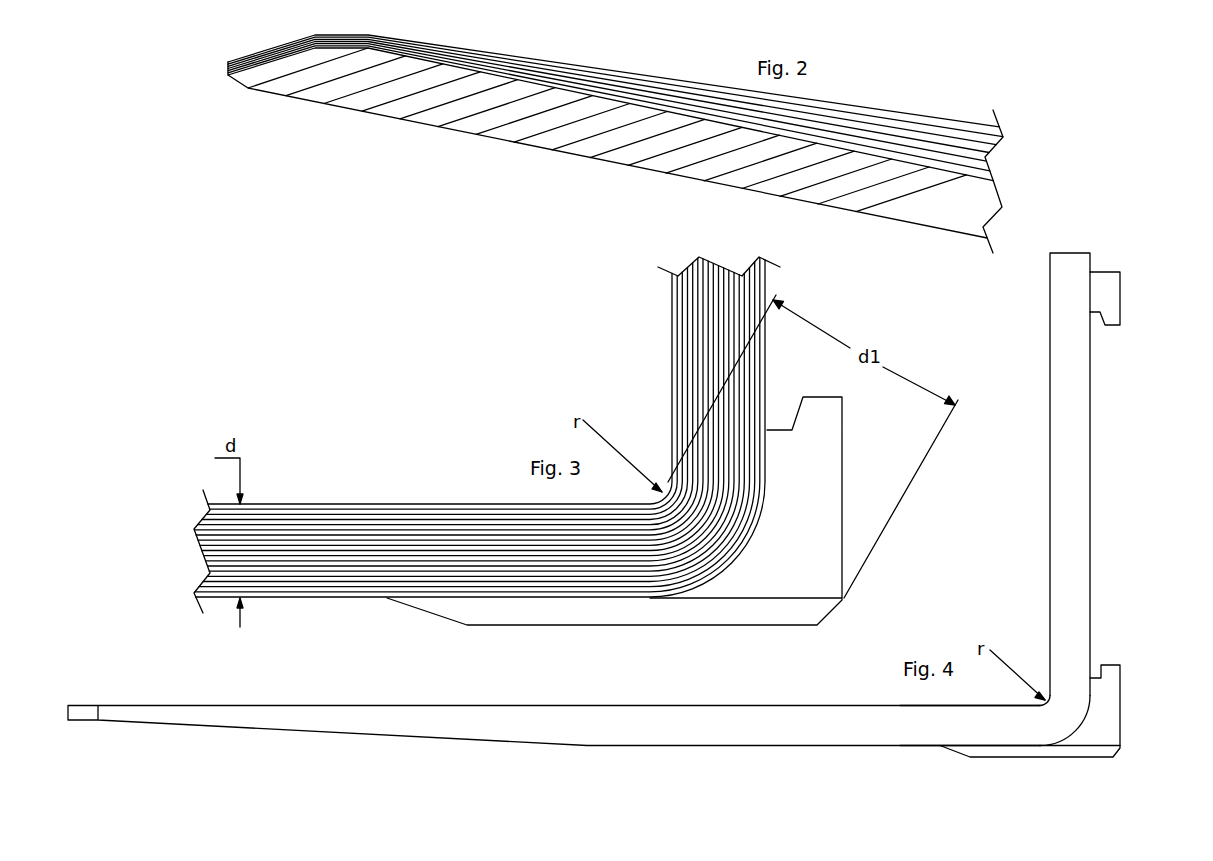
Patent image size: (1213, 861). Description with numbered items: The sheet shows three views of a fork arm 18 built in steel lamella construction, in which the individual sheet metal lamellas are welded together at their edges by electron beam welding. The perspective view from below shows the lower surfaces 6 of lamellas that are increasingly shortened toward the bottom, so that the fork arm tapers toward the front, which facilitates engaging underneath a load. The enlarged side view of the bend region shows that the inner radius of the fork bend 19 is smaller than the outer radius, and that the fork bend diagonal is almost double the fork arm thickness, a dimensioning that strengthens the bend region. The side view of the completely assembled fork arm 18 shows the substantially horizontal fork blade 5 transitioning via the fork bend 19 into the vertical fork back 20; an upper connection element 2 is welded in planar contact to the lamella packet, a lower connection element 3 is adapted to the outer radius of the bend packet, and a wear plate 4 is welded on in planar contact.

In FIG. 4, the upper connection element 2 is at (1102, 293).
In FIG. 4, the lower connection element 3 is at (1103, 712).
In FIG. 4, the wear plate 4 is at (1013, 751).
In FIG. 4, the fork blade 5 is at (326, 717).
In FIG. 2, the lower surfaces of the shortened lamellas 6 is at (367, 80).
In FIG. 4, the fork arm 18 is at (960, 723).
In FIG. 4, the fork bend 19 is at (1068, 710).
In FIG. 4, the fork back 20 is at (1071, 540).